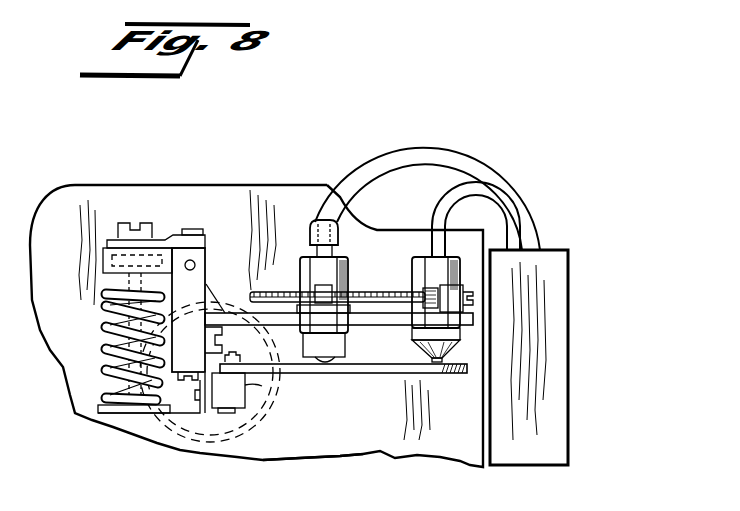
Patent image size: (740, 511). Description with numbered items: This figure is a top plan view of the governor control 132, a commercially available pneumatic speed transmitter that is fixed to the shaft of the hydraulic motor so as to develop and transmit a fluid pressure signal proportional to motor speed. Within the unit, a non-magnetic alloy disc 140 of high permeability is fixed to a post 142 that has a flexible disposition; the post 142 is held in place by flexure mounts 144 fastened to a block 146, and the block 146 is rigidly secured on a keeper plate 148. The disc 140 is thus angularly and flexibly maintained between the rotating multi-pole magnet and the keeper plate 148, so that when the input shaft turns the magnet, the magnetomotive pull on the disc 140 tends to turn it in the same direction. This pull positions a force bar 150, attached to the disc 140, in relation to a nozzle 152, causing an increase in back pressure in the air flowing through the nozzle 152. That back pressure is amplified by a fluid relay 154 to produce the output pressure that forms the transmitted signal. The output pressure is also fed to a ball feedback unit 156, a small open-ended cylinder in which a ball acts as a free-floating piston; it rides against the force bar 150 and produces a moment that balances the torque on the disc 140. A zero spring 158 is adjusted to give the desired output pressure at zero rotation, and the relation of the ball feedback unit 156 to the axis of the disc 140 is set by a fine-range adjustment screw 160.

The governor control 132 is at (124, 440).
The non-magnetic alloy disc 140 is at (220, 445).
The post 142 is at (262, 386).
The flexure mounts 144 is at (214, 366).
The block 146 is at (191, 285).
The keeper plate 148 is at (313, 452).
The force bar 150 is at (378, 374).
The nozzle 152 is at (440, 363).
The fluid relay 154 is at (560, 366).
The ball feedback unit 156 is at (326, 366).
The zero spring 158 is at (100, 327).
The fine-range adjustment screw 160 is at (389, 293).